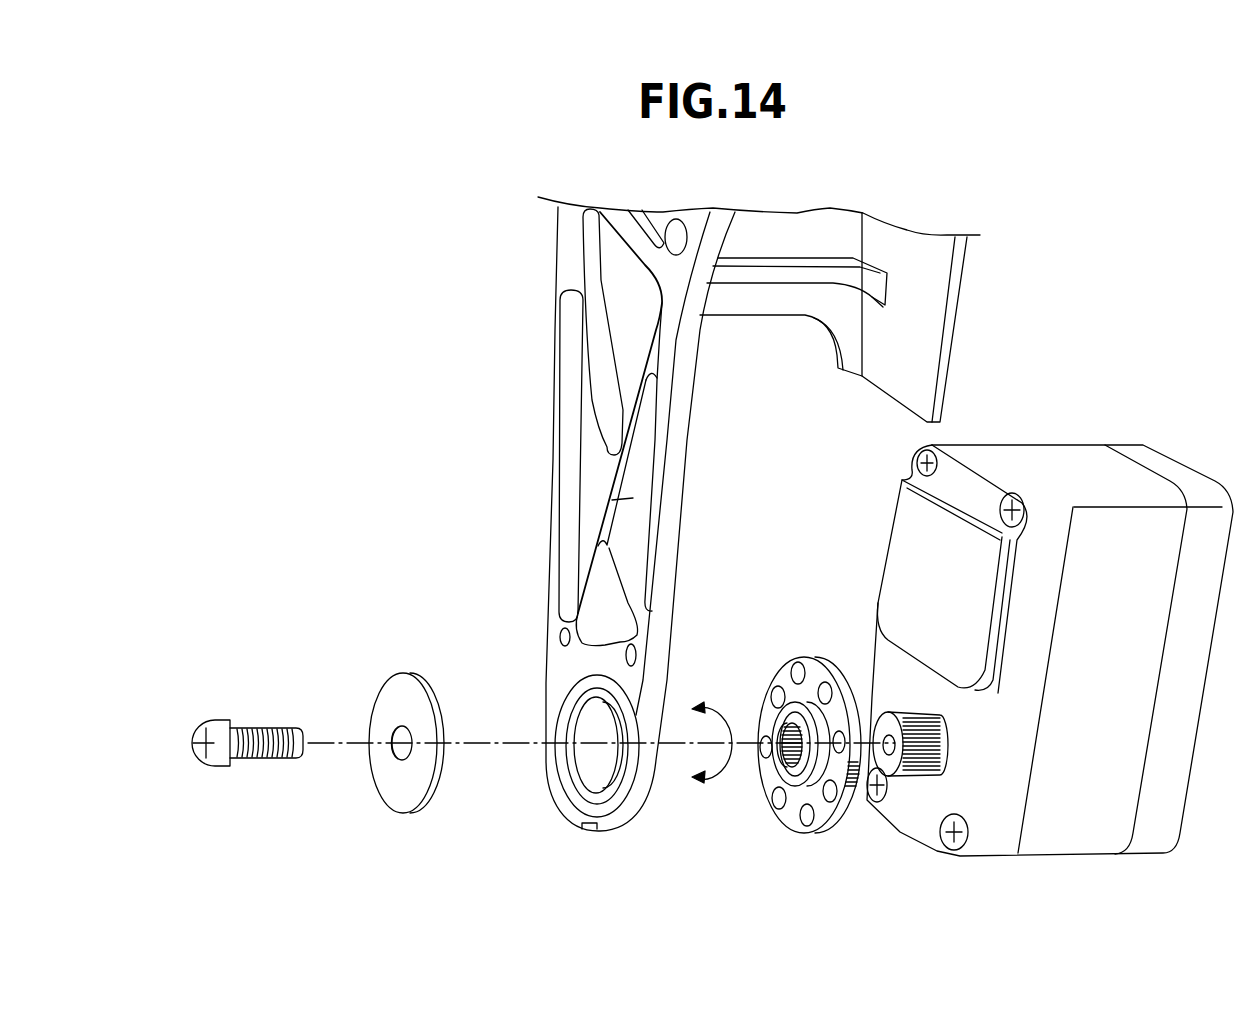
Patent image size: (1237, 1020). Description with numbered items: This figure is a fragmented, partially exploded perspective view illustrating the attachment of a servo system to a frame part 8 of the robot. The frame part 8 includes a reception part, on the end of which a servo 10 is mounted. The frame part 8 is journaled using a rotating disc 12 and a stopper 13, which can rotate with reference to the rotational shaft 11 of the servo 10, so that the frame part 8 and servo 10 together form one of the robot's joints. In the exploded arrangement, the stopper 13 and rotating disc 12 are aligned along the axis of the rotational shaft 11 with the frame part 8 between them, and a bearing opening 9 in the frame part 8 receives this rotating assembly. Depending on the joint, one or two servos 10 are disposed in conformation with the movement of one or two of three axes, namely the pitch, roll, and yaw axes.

The frame part 8 is at (670, 527).
The boss hole 9 is at (603, 748).
The servo 10 is at (1087, 467).
The rotational shaft 11 is at (940, 735).
The rotating disc 12 is at (790, 828).
The stopper 13 is at (421, 673).